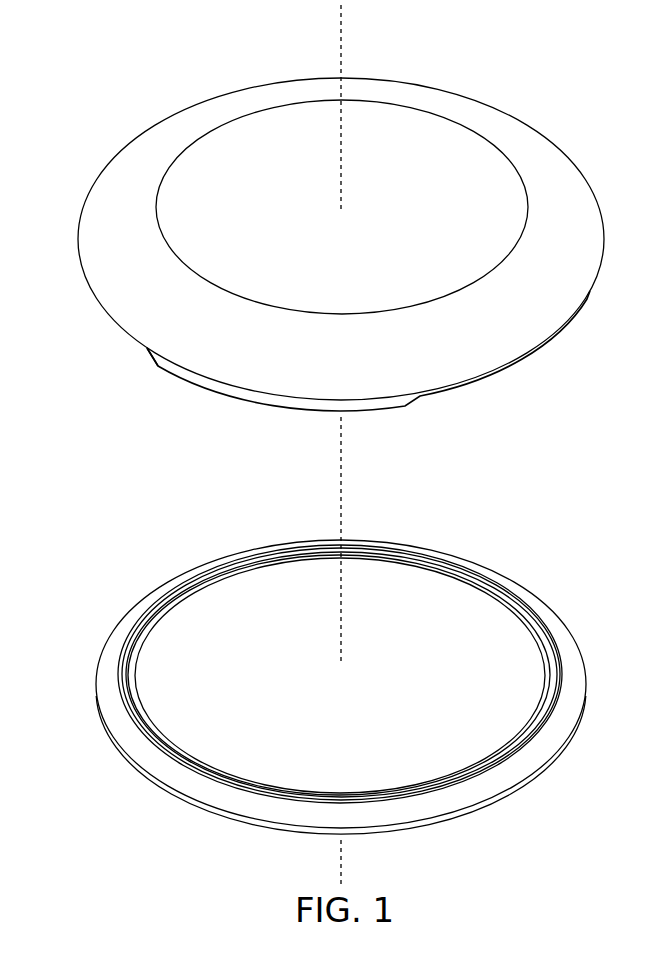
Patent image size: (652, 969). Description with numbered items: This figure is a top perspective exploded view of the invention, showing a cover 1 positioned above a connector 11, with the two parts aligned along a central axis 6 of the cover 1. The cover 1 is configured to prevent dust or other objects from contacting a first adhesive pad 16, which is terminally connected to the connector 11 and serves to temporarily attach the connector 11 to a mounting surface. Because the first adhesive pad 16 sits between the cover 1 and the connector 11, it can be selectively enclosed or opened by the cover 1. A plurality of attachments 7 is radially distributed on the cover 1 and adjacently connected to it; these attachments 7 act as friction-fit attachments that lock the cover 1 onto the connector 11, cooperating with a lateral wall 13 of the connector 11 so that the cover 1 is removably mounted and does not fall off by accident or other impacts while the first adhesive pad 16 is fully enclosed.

The cover 1 is at (342, 229).
The central axis 6 is at (340, 43).
The plurality of attachments 7 is at (192, 378).
The connector 11 is at (342, 694).
The lateral wall 13 is at (100, 683).
The first adhesive pad 16 is at (403, 567).